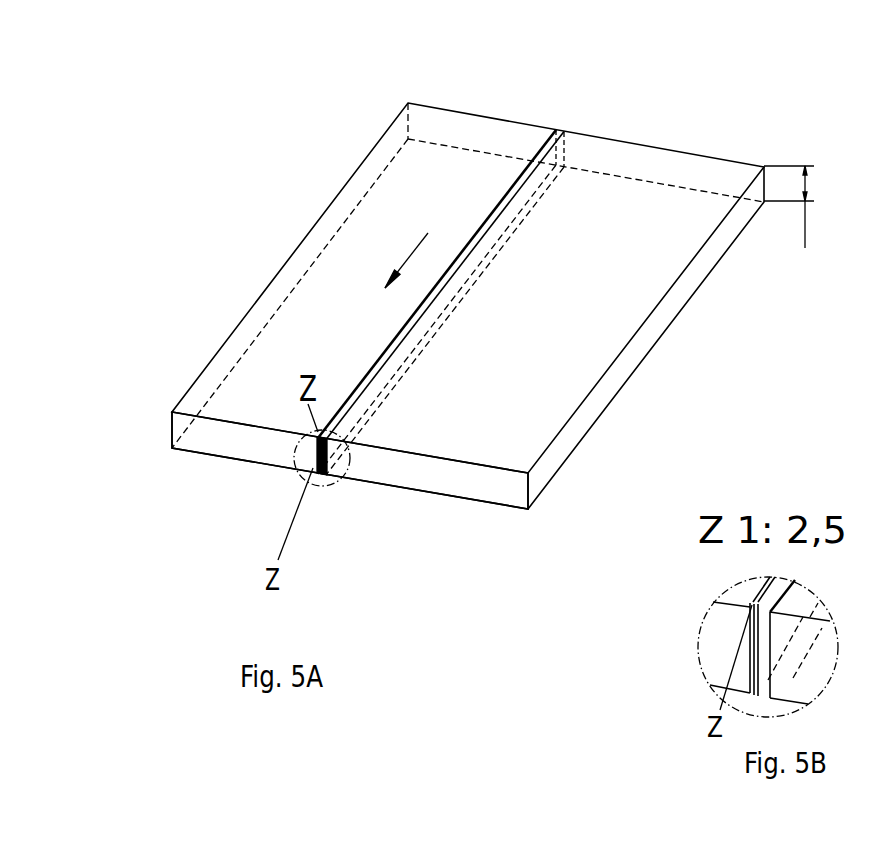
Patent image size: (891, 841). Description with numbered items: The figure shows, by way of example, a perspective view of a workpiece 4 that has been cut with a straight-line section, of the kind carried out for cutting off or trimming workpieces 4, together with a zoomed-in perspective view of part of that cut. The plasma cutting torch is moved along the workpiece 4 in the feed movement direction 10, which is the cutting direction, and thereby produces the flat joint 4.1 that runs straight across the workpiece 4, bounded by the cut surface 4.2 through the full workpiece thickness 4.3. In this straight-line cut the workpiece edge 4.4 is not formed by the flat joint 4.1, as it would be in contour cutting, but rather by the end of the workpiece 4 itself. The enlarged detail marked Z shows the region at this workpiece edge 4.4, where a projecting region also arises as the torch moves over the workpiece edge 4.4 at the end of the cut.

The workpiece 4 is at (525, 425).
The flat joint 4.1 is at (519, 178).
The cut surface 4.2 is at (564, 134).
The workpiece thickness 4.3 is at (789, 207).
The workpiece edge 4.4 is at (253, 445).
The feed movement direction of the plasma cutting torch, cutting direction 10 is at (404, 258).